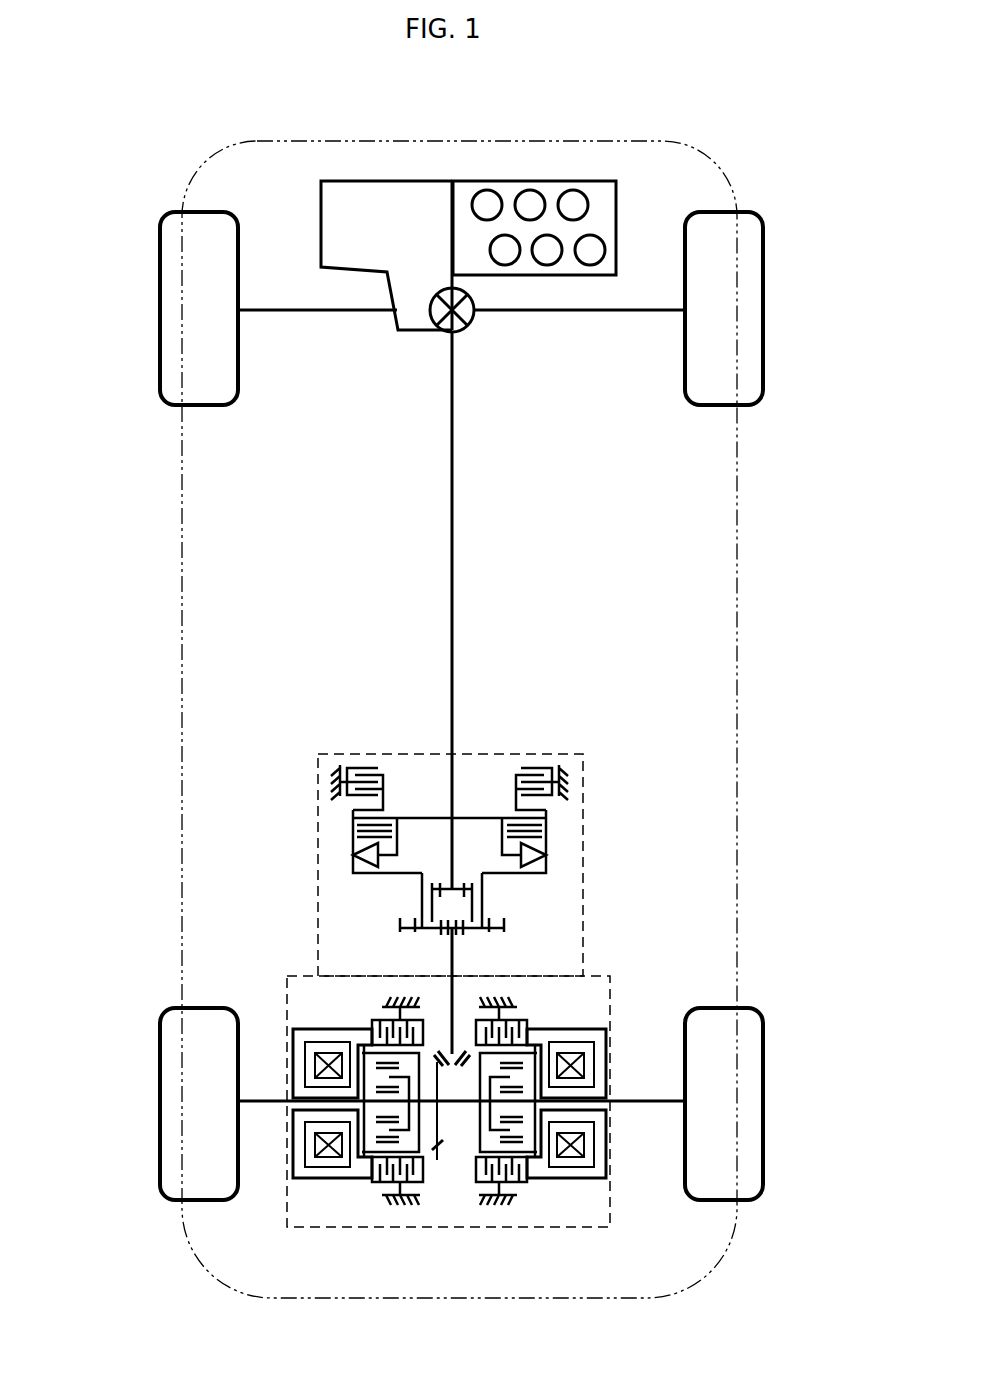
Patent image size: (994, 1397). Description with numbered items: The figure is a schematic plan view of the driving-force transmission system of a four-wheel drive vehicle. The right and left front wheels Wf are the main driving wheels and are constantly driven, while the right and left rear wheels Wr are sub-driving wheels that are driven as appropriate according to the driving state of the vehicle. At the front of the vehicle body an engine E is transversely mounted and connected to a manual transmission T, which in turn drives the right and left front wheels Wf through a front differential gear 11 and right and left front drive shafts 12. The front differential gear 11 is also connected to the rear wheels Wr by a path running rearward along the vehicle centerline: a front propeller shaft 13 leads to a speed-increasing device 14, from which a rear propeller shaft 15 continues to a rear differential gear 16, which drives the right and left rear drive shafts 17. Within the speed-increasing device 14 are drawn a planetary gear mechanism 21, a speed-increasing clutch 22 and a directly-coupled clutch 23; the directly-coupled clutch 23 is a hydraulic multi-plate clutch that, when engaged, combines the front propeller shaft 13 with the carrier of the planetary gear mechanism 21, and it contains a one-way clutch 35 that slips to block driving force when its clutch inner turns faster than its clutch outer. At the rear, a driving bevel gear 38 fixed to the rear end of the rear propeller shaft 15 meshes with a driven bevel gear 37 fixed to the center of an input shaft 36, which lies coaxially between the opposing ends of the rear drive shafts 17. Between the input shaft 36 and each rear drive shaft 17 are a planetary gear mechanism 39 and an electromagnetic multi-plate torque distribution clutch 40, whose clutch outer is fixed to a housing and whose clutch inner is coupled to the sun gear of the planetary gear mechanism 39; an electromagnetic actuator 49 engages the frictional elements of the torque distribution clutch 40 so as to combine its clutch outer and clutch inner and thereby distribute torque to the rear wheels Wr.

The manual transmission T is at (384, 190).
The engine E is at (551, 190).
The front wheels Wf is at (160, 272).
The rear wheels Wr is at (160, 1102).
The front differential gear 11 is at (470, 324).
The front drive shafts 12 is at (310, 313).
The front propeller shaft 13 is at (455, 562).
The speed-increasing device 14 is at (585, 878).
The rear propeller shaft 15 is at (455, 957).
The rear differential gear 16 is at (610, 988).
The rear drive shafts 17 is at (257, 1104).
The planetary gear mechanism 21 is at (510, 908).
The speed-increasing clutch 22 is at (538, 765).
The directly-coupled clutch 23 is at (567, 835).
The one-way clutch 35 is at (368, 866).
The input shaft 36 is at (441, 1104).
The driven bevel gear 37 is at (437, 1151).
The driving bevel gear 38 is at (455, 1066).
The planetary gear mechanism 39 is at (362, 1155).
The torque distribution clutch 40 is at (355, 1006).
The electromagnetic actuator 49 is at (315, 1196).